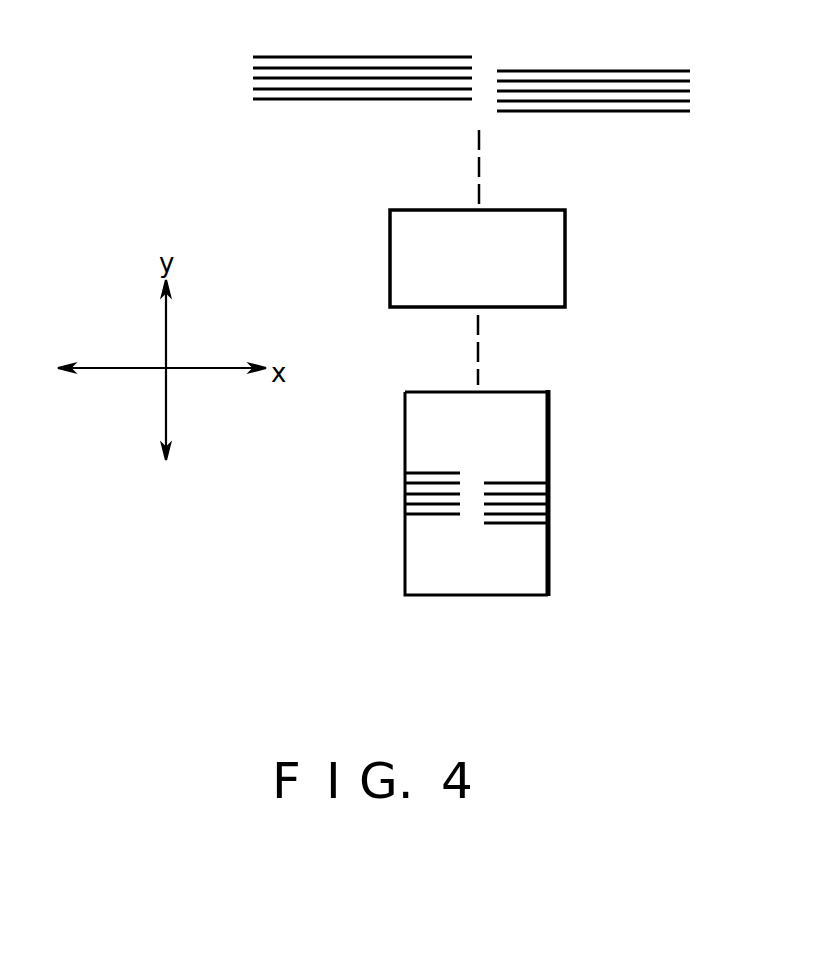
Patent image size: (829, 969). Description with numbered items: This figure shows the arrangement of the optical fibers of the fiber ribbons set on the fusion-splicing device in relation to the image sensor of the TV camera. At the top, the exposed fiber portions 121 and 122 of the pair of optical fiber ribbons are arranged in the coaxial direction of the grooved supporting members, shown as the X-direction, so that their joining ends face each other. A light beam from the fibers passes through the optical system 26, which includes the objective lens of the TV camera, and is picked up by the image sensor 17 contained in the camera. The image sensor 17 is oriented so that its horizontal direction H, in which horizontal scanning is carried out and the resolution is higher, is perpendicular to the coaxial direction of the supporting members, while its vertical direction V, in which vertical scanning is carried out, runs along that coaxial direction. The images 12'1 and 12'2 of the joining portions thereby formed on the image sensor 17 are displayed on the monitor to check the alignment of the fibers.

The exposed portion of optical fibers 121 is at (350, 78).
The exposed portion of optical fibers 122 is at (610, 80).
The optical system 26 is at (566, 228).
The image sensor 17 is at (533, 408).
The vertical direction V is at (516, 391).
The horizontal direction H is at (549, 425).
The image of fibers 12'1 is at (397, 499).
The image of fibers 12'2 is at (553, 504).